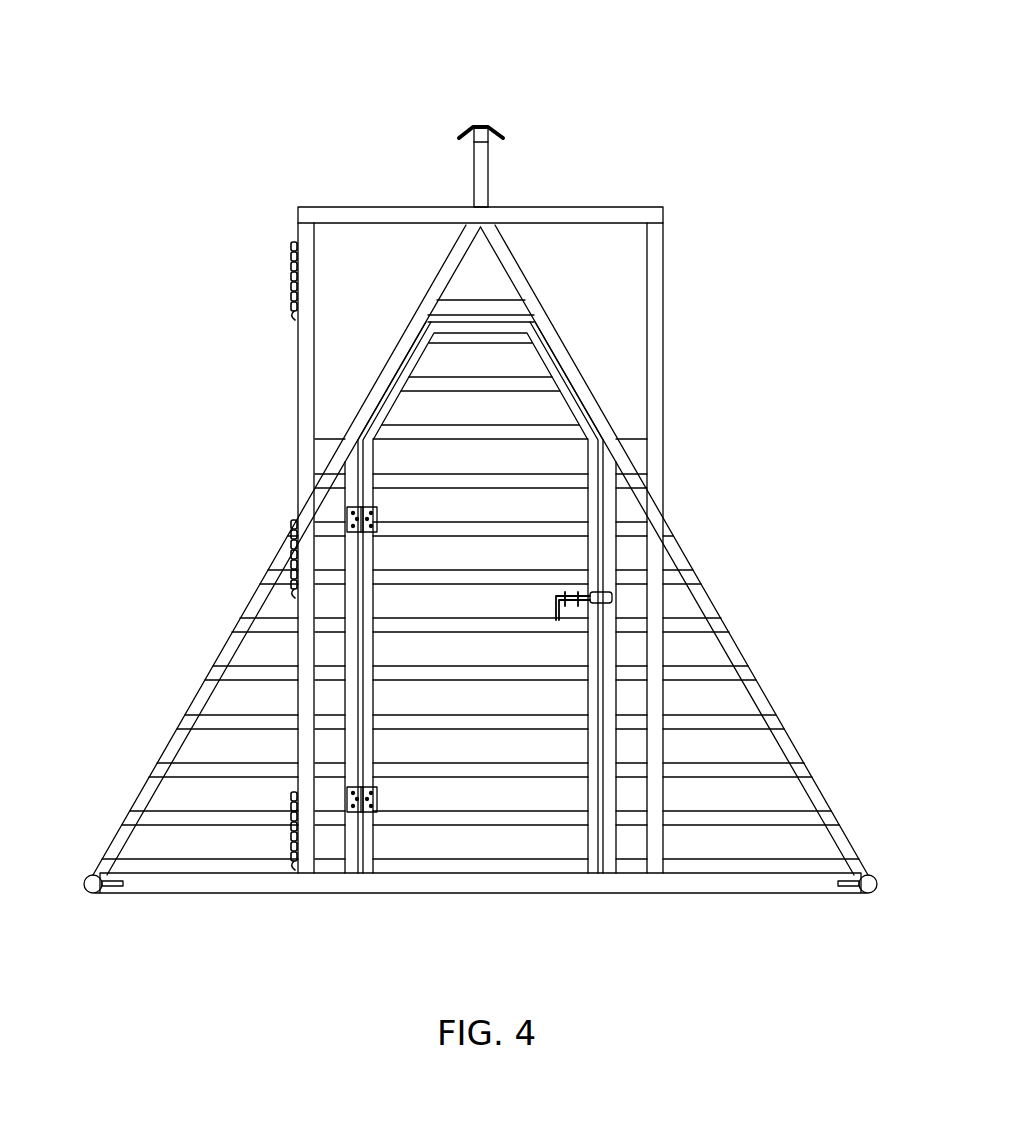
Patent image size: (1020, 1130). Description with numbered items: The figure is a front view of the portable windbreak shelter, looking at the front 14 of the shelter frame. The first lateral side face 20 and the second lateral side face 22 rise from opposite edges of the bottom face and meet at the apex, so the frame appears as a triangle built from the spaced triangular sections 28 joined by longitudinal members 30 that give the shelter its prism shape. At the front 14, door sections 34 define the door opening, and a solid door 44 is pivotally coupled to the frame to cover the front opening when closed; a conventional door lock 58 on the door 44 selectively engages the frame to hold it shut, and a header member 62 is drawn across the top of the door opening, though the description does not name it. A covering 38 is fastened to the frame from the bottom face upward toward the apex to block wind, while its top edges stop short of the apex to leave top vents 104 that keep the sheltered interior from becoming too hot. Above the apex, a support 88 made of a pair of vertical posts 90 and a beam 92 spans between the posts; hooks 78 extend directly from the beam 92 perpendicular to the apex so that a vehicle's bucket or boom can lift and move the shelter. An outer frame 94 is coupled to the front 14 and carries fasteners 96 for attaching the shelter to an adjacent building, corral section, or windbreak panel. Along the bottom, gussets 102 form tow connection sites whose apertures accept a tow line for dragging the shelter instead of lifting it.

The front 14 is at (674, 930).
The first lateral side face 20 is at (675, 550).
The second lateral side face 22 is at (287, 550).
The triangular sections 28 is at (742, 655).
The longitudinal members 30 is at (91, 874).
The door sections 34 is at (352, 836).
The covering 38 is at (703, 753).
The door 44 is at (485, 836).
The door lock 58 is at (602, 604).
The header 62 is at (488, 312).
The hooks 78 is at (458, 136).
The support 88 is at (467, 109).
The vertical posts 90 is at (487, 172).
The beam 92 is at (484, 75).
The outer frame 94 is at (623, 212).
The fasteners 96 is at (292, 297).
The gussets 102 is at (112, 893).
The top vents 104 is at (472, 276).